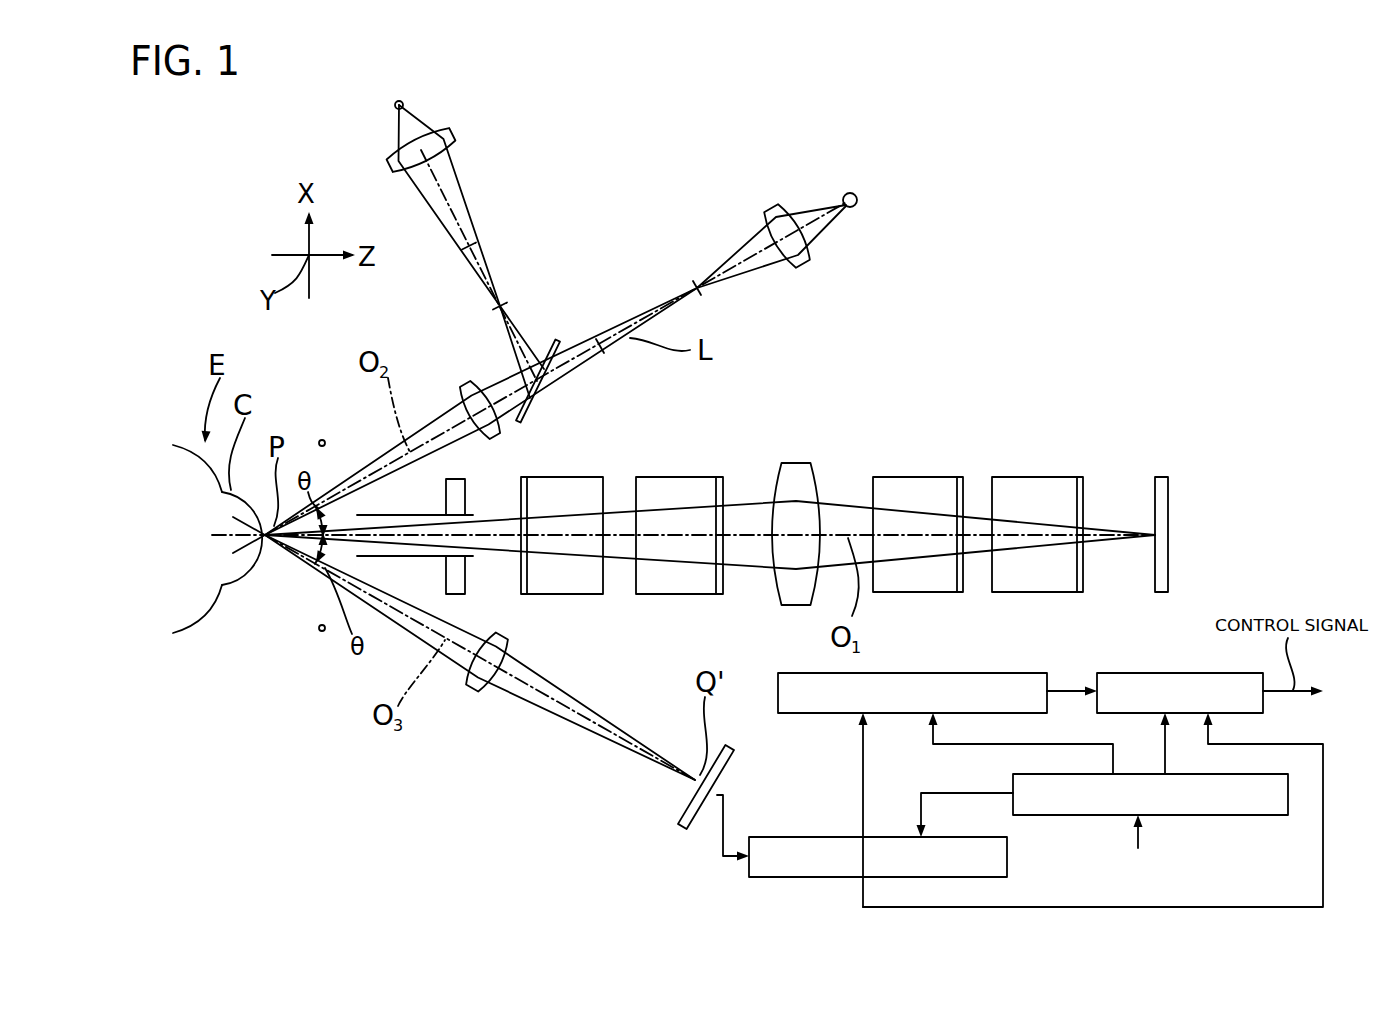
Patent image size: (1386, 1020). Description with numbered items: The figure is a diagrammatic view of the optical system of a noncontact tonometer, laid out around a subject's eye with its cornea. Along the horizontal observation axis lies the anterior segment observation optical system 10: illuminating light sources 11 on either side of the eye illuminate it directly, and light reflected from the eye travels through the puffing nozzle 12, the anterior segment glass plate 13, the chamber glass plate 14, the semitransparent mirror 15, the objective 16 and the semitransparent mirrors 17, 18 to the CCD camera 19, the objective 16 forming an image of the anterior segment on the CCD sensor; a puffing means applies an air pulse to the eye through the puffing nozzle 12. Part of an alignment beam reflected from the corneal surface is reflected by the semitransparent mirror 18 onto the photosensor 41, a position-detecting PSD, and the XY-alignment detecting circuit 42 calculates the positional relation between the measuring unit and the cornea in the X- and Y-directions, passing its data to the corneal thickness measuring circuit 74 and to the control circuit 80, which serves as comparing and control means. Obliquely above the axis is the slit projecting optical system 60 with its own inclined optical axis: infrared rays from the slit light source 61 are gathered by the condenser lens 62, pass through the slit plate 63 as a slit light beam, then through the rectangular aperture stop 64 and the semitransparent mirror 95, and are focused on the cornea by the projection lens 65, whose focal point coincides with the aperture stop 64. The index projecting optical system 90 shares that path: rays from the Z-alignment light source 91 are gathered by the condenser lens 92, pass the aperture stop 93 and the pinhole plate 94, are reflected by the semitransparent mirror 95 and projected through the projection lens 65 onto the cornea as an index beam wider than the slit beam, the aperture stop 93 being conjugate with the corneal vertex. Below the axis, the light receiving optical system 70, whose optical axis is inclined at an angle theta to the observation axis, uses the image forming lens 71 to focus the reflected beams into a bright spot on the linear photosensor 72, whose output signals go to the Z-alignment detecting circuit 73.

The anterior segment observation optical system 10 is at (750, 428).
The illuminating light sources 11 is at (322, 440).
The puffing nozzle 12 is at (405, 515).
The anterior segment glass plate 13 is at (487, 489).
The chamber glass plate 14 is at (590, 477).
The semitransparent mirror 15 is at (682, 477).
The objective 16 is at (800, 475).
The semitransparent mirror 17 is at (922, 477).
The semitransparent mirror 18 is at (1032, 477).
The CCD camera 19 is at (1162, 477).
The photosensor 41 is at (1103, 843).
The XY-alignment detecting circuit 42 is at (1250, 815).
The slit projecting optical system 60 is at (625, 225).
The slit light source 61 is at (857, 206).
The condenser lens 62 is at (773, 208).
The slit plate 63 is at (716, 322).
The rectangular aperture stop 64 is at (619, 374).
The projection lens 65 is at (462, 386).
The light receiving optical system 70 is at (558, 764).
The image forming lens 71 is at (470, 690).
The linear photosensor 72 is at (683, 812).
The Z-alignment detecting circuit 73 is at (820, 877).
The corneal thickness measuring circuit 74 is at (982, 673).
The control circuit 80 is at (1182, 673).
The index projecting optical system 90 is at (508, 170).
The Z-alignment light source 91 is at (395, 106).
The condenser lens 92 is at (452, 134).
The aperture stop 93 is at (423, 268).
The pinhole plate 94 is at (468, 323).
The semitransparent mirror 95 is at (524, 418).